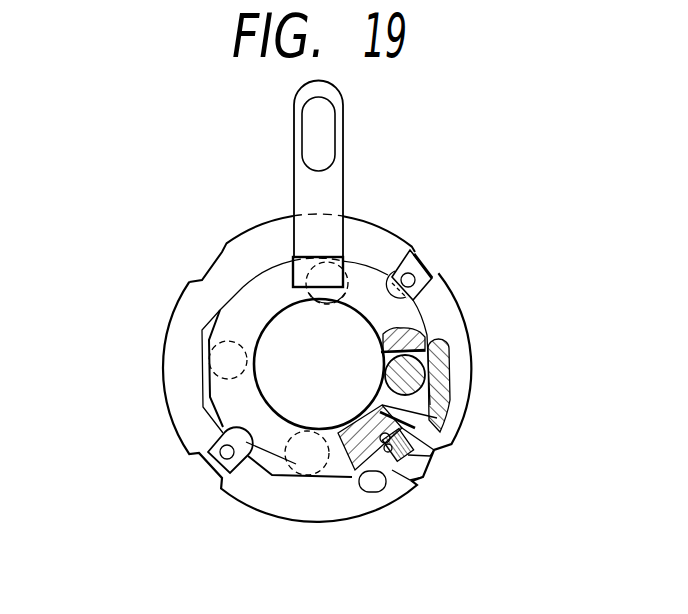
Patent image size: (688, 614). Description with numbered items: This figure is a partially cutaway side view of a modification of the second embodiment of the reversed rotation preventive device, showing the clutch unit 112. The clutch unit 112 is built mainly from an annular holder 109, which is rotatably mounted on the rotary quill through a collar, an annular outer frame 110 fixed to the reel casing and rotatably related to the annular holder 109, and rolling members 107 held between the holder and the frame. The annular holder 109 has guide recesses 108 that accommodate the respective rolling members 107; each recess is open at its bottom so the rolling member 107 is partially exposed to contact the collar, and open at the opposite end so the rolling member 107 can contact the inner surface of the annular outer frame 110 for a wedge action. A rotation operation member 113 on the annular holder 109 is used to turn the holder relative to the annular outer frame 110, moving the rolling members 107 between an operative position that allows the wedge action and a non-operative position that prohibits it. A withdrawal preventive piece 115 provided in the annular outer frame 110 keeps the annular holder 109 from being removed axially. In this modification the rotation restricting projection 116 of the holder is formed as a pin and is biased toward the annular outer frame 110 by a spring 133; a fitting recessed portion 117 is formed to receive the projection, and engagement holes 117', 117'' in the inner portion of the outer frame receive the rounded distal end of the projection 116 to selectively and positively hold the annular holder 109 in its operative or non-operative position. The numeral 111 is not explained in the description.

The rolling member 107 is at (235, 337).
The guide recess 108 is at (445, 382).
The annular holder 109 is at (272, 460).
The annular outer frame 110 is at (185, 319).
The support element 111 is at (437, 418).
The clutch unit 112 is at (165, 441).
The rotation operation member 113 is at (346, 149).
The withdrawal preventive piece 115 is at (400, 268).
The rotation restricting projection 116 is at (425, 445).
The fitting recessed portion 117 is at (381, 502).
The engagement hole 117' is at (470, 485).
The engagement hole 117'' is at (446, 508).
The spring 133 is at (434, 449).